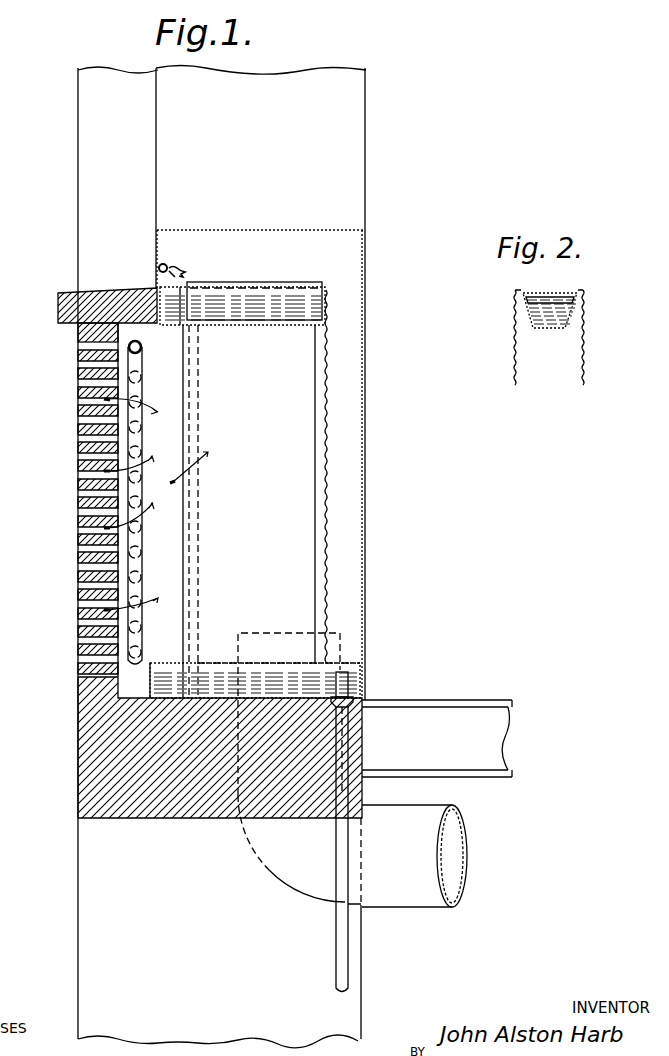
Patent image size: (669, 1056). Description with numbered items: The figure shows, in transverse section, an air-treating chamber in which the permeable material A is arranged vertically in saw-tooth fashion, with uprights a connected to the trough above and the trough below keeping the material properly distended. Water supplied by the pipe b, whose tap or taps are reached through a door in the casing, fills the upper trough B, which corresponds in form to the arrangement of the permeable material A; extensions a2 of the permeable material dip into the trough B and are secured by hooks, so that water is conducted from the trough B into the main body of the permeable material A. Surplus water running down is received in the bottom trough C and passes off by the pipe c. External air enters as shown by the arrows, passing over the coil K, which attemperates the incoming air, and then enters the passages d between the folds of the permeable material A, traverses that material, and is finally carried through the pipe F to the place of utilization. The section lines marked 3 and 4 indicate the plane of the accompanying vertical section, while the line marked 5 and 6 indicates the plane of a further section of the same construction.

In FIG. 1, the section line 5 is at (147, 345).
In FIG. 1, the pipe b is at (166, 265).
In FIG. 1, the section line 3 is at (250, 358).
In FIG. 1, the section line 4 is at (244, 366).
In FIG. 1, the extensions of the permeable material a2 is at (303, 292).
In FIG. 2, the extensions of the permeable material a2 is at (570, 298).
In FIG. 1, the section line 6 is at (330, 317).
In FIG. 1, the trough B is at (242, 320).
In FIG. 2, the trough B is at (550, 323).
In FIG. 1, the passages d is at (257, 462).
In FIG. 1, the permeable material A is at (255, 494).
In FIG. 2, the permeable material A is at (594, 362).
In FIG. 1, the coil K is at (150, 568).
In FIG. 1, the uprights a is at (189, 608).
In FIG. 1, the pipe F is at (335, 655).
In FIG. 1, the bottom trough C is at (353, 668).
In FIG. 1, the pipe c is at (343, 770).